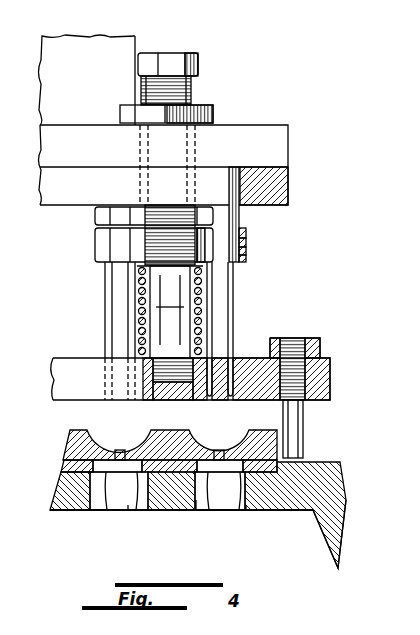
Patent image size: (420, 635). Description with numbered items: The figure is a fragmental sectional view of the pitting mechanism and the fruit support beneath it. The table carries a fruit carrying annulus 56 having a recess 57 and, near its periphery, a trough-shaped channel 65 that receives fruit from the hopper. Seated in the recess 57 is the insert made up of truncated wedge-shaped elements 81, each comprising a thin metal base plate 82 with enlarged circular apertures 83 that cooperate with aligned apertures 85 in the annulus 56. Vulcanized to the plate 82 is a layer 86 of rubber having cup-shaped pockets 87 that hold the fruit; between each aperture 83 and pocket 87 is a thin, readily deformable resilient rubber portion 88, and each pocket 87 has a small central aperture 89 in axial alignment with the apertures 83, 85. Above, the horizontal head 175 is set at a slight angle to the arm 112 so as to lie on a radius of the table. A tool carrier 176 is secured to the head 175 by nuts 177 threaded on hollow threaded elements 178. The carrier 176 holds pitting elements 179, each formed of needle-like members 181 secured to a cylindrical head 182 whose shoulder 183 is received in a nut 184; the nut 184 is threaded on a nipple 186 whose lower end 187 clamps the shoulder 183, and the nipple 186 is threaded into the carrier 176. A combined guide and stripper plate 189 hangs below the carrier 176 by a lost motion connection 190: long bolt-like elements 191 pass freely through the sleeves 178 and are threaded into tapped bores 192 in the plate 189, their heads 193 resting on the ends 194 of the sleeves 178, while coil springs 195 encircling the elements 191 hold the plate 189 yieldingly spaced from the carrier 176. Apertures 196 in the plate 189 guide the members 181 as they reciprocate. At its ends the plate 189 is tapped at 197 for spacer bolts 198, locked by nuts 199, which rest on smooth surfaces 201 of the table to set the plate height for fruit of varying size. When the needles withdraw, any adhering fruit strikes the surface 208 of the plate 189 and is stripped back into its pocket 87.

The fruit carrying annulus 56 is at (46, 511).
The recess 57 is at (172, 510).
The trough-shaped channel 65 is at (350, 515).
The truncated wedge-shaped element 81 is at (272, 427).
The base plate 82 is at (198, 510).
The circular aperture 83 is at (133, 510).
The aligned aperture 85 is at (100, 505).
The layer of resilient material 86 is at (67, 447).
The cup-shaped pocket 87 is at (192, 462).
The thin rubber portion 88 is at (113, 464).
The small central aperture 89 is at (118, 450).
The arm 112 is at (284, 123).
The head 175 is at (290, 145).
The tool carrier 176 is at (290, 195).
The nut 177 is at (214, 115).
The hollow threaded element 178 is at (196, 97).
The pitting element 179 is at (104, 297).
The needle-like member 181 is at (120, 333).
The cylindrical head 182 is at (247, 244).
The shoulder 183 is at (243, 264).
The nut 184 is at (247, 232).
The nipple 186 is at (95, 210).
The lower end of nipple 187 is at (290, 172).
The combined guide and stripper plate 189 is at (331, 373).
The lost motion connection 190 is at (128, 279).
The bolt-like element 191 is at (171, 324).
The tapped bore 192 is at (152, 399).
The head of bolt-like element 193 is at (196, 53).
The end of sleeve 194 is at (196, 82).
The coil spring 195 is at (203, 299).
The guide aperture 196 is at (208, 399).
The tapped hole 197 is at (331, 393).
The spacer bolt 198 is at (271, 353).
The lock nut 199 is at (321, 346).
The smooth surface 201 is at (332, 462).
The stripper surface 208 is at (56, 400).